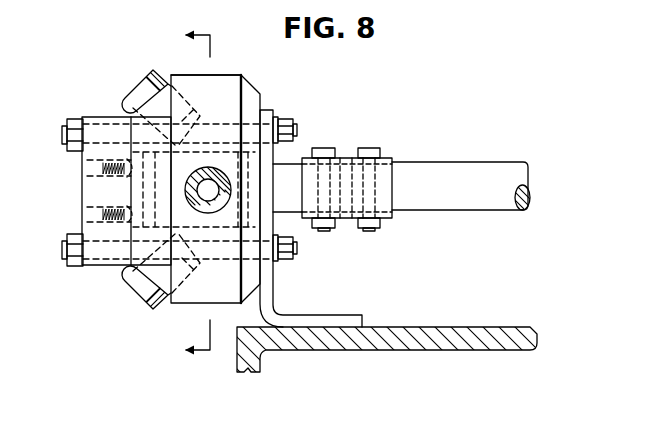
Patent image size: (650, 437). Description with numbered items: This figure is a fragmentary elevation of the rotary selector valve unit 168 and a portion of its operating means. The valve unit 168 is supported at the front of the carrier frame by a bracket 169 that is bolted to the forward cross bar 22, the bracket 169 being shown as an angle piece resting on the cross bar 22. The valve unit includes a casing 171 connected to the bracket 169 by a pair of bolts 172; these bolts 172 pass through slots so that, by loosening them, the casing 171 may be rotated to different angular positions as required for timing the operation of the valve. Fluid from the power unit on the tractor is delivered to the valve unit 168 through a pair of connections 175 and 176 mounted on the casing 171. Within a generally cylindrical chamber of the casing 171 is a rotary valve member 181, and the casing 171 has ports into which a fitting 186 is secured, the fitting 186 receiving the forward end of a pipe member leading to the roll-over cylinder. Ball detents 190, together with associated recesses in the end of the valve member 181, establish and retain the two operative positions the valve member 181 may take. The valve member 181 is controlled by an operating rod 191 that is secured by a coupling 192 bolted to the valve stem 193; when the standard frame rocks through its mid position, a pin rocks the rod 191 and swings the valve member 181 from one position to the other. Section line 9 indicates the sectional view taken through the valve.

The section line 9- 9 is at (193, 183).
The forward cross bar 22 is at (446, 325).
The rotary selector valve unit 168 is at (228, 72).
The bracket 169 is at (273, 290).
The casing 171 is at (186, 80).
The bolts 172 is at (67, 131).
The connection 175 is at (131, 98).
The connection 176 is at (140, 288).
The rotary valve member 181 is at (225, 143).
The fitting 186 is at (217, 213).
The ball detents 190 is at (126, 191).
The operating rod 191 is at (468, 162).
The coupling 192 is at (347, 157).
The valve stem 193 is at (292, 168).